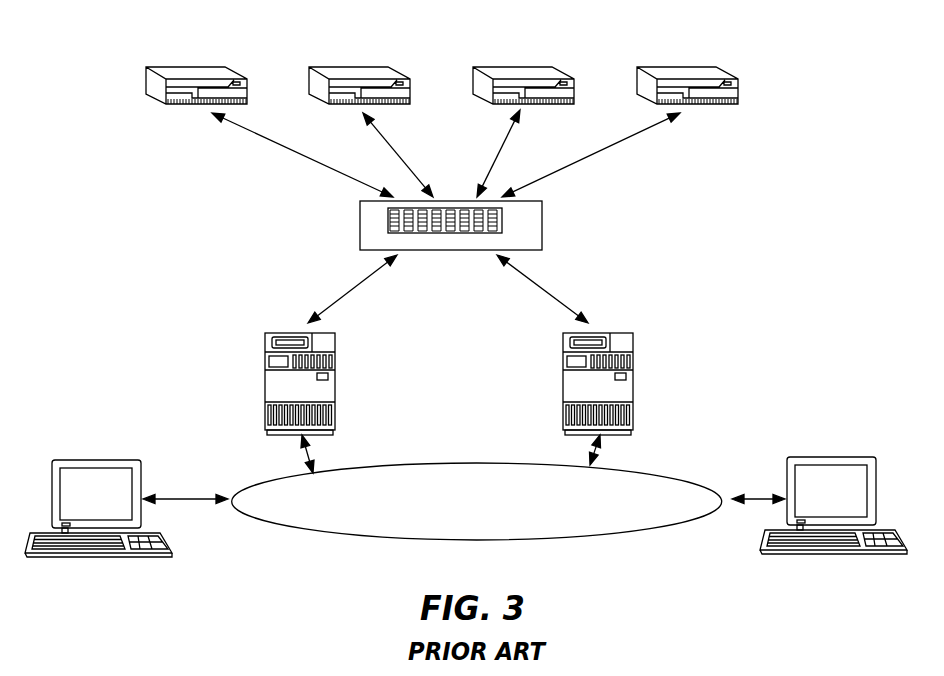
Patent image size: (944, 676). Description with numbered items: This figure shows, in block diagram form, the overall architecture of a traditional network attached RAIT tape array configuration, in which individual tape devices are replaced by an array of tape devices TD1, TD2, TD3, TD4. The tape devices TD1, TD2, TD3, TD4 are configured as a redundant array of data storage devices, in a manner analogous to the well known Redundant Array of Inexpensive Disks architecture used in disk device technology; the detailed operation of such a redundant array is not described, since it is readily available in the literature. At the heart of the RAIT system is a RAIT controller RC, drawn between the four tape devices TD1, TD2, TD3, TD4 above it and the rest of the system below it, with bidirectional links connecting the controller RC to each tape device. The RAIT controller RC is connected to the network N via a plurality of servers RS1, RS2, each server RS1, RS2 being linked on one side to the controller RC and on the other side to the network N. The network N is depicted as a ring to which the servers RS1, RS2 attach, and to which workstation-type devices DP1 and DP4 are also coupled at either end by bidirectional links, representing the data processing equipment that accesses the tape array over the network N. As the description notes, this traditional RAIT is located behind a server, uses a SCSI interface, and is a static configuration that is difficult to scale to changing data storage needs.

The tape device TD1 is at (198, 66).
The tape device TD2 is at (362, 66).
The tape device TD3 is at (521, 65).
The tape device TD4 is at (698, 64).
The RAIT controller RC is at (542, 219).
The server RS1 is at (265, 358).
The server RS2 is at (633, 372).
The network N is at (453, 463).
The data processing device 1 DP1 is at (95, 460).
The data processing device 4 DP4 is at (855, 457).